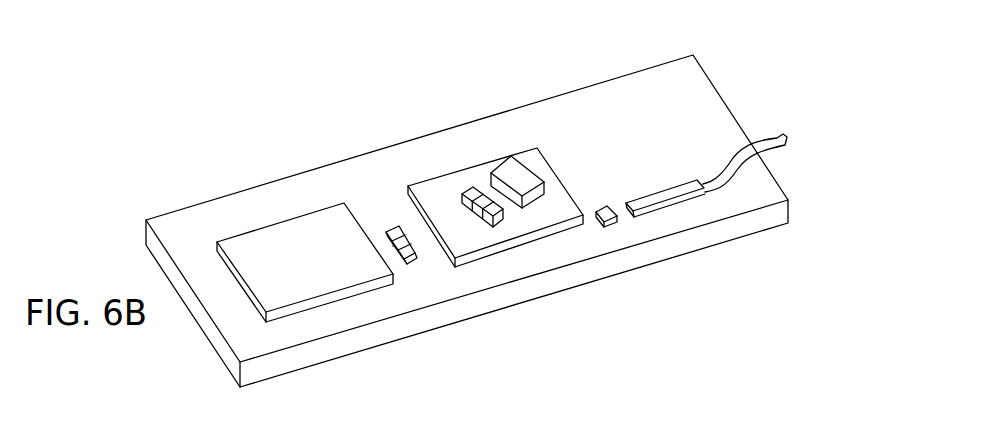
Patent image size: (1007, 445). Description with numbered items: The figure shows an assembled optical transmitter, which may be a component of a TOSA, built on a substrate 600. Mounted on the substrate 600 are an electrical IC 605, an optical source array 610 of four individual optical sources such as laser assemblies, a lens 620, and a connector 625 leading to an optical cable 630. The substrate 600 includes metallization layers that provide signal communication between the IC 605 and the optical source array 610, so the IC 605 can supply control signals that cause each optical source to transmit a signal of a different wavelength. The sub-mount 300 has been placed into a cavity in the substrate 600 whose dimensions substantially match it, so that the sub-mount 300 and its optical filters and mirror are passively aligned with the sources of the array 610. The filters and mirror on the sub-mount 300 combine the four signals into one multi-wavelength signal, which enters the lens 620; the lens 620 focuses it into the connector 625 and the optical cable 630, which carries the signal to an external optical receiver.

The substrate 600 is at (722, 98).
The electrical IC 605 is at (274, 223).
The optical source array 610 is at (392, 228).
The sub-mount 300 is at (470, 167).
The lens 620 is at (600, 205).
The connector 625 is at (663, 190).
The optical cable 630 is at (766, 139).